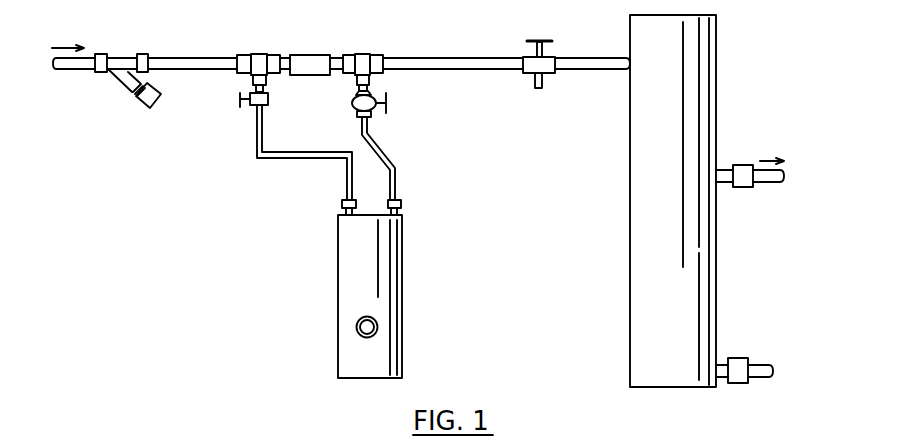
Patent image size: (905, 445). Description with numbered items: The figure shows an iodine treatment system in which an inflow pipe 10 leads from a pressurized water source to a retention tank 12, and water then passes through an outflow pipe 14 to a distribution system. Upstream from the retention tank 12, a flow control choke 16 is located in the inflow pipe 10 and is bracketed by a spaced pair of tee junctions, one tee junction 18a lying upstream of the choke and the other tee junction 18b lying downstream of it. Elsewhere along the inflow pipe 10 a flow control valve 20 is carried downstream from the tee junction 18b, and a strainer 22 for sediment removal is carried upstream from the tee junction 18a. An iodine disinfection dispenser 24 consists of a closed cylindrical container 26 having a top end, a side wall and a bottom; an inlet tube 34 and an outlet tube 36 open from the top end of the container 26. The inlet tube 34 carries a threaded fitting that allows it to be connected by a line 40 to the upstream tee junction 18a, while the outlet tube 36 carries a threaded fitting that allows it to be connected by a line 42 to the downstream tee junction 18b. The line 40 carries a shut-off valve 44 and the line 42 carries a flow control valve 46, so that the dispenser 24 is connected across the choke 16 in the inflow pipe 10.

The inflow pipe 10 is at (202, 56).
The retention tank 12 is at (630, 32).
The outflow pipe 14 is at (723, 183).
The flow control choke 16 is at (310, 58).
The upstream tee junction 18a is at (260, 58).
The downstream tee junction 18b is at (362, 58).
The flow control valve 20 is at (533, 65).
The strainer 22 is at (121, 52).
The iodine disinfection dispenser 24 is at (402, 287).
The closed cylindrical container 26 is at (403, 333).
The inlet tube 34 is at (342, 205).
The outlet tube 36 is at (400, 205).
The line 40 is at (257, 138).
The line 42 is at (387, 158).
The shut-off valve 44 is at (240, 99).
The flow control valve 46 is at (387, 100).